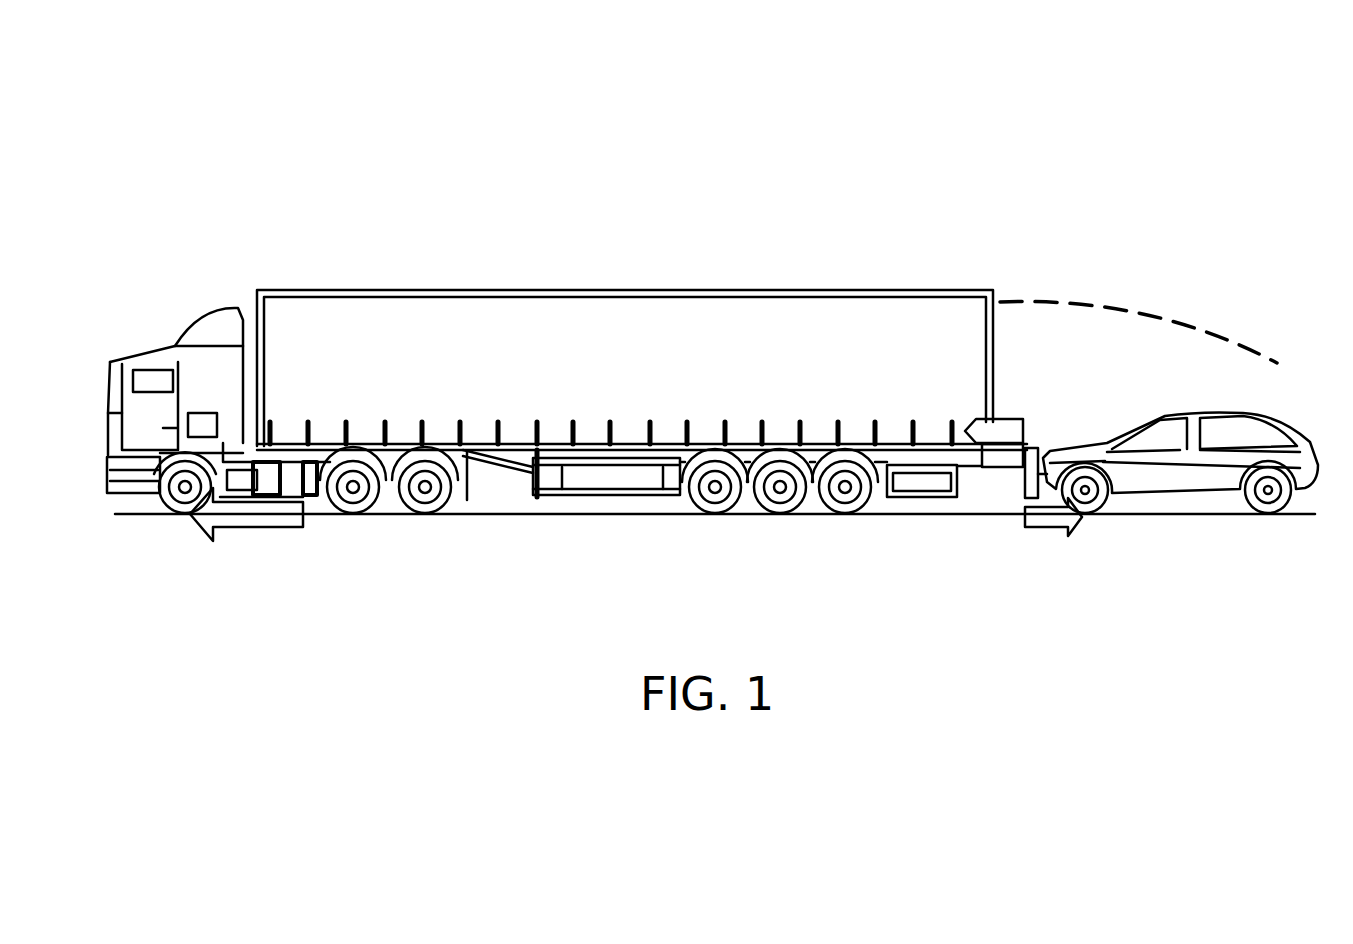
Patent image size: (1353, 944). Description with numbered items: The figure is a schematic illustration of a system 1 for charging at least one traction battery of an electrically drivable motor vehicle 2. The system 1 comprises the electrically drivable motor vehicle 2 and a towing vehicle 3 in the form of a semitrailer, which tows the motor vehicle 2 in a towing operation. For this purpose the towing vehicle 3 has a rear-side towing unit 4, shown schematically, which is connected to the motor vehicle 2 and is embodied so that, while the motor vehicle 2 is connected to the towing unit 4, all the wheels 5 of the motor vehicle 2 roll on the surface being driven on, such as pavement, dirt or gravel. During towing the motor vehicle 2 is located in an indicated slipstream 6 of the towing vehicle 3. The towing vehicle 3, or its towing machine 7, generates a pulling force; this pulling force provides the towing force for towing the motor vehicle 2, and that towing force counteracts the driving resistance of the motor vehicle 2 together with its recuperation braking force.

The system 1 is at (620, 116).
The electrically drivable motor vehicle 2 is at (1218, 474).
The towing vehicle 3 is at (477, 285).
The towing unit 4 is at (998, 484).
The wheels 5 is at (1288, 518).
The slipstream 6 is at (1097, 300).
The towing machine 7 is at (172, 320).